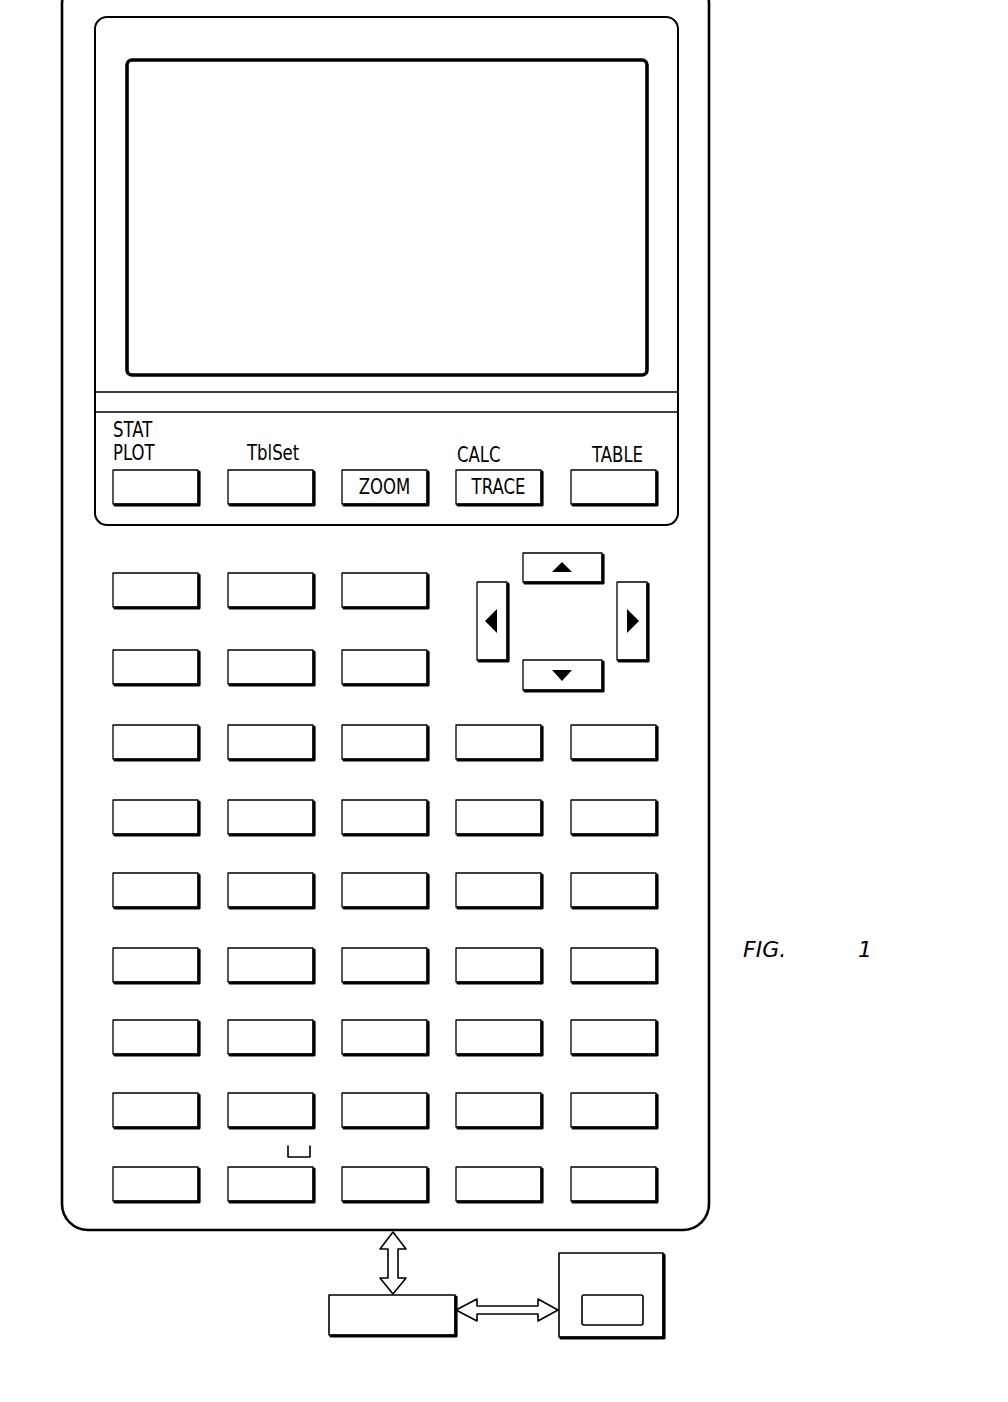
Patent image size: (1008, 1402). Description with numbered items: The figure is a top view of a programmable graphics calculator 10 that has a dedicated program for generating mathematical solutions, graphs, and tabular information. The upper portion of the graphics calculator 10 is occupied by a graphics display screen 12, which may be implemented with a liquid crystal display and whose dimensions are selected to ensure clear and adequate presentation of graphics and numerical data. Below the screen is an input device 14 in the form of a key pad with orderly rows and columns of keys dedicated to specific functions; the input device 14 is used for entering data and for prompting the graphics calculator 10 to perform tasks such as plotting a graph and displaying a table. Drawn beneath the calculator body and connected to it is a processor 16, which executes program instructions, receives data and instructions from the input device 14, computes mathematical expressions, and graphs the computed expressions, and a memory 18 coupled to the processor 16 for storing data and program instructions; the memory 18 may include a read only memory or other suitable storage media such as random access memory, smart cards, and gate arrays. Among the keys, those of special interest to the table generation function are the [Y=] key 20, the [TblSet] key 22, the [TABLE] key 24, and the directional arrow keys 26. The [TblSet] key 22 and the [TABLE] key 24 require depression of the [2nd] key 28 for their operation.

The graphics calculator 10 is at (787, 54).
The graphics display screen 12 is at (402, 230).
The input device 14 is at (756, 772).
The processor 16 is at (433, 1294).
The memory 18 is at (690, 1305).
The [Y=] key 20 is at (176, 467).
The [TblSet] key 22 is at (308, 467).
The [TABLE] key 24 is at (586, 469).
The directional arrow keys 26 is at (627, 568).
The [2nd] key 28 is at (170, 572).